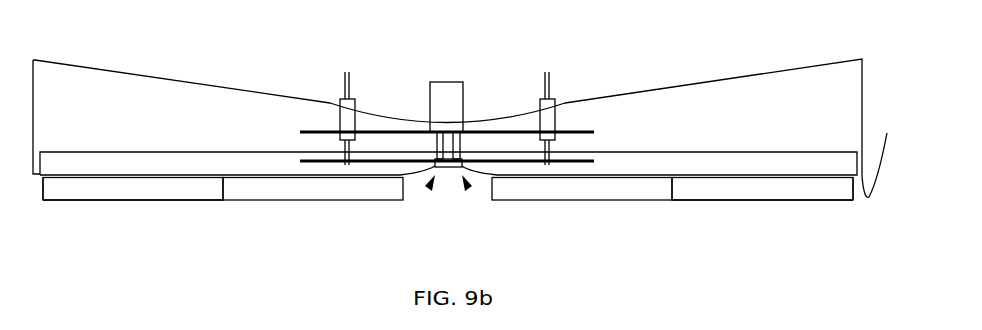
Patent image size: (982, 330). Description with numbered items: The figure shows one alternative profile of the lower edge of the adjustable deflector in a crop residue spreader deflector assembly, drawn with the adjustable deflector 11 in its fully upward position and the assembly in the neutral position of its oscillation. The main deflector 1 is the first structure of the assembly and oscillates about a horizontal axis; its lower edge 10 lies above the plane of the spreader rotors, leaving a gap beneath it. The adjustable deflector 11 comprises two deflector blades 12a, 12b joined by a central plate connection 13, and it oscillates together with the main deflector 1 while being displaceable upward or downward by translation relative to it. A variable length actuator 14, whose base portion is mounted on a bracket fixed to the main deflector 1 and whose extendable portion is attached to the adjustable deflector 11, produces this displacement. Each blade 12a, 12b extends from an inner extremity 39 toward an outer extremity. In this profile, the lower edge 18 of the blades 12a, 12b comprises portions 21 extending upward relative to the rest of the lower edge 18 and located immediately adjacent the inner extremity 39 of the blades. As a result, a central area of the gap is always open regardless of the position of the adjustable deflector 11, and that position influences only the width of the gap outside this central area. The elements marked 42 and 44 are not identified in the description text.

The main deflector 1 is at (165, 113).
The lower edge of the main deflector 10 is at (878, 153).
The adjustable deflector 11 is at (245, 136).
The adjustable deflector blade 12a is at (273, 165).
The adjustable deflector blade 12b is at (633, 165).
The central plate connection 13 is at (449, 168).
The variable length actuator 14 is at (450, 92).
The lower edge of the adjustable deflector blades 18 is at (170, 180).
The upwardly extending portions 21 is at (430, 188).
The inner extremity 39 is at (438, 156).
The first end piece 42 is at (108, 191).
The second end piece 44 is at (765, 183).